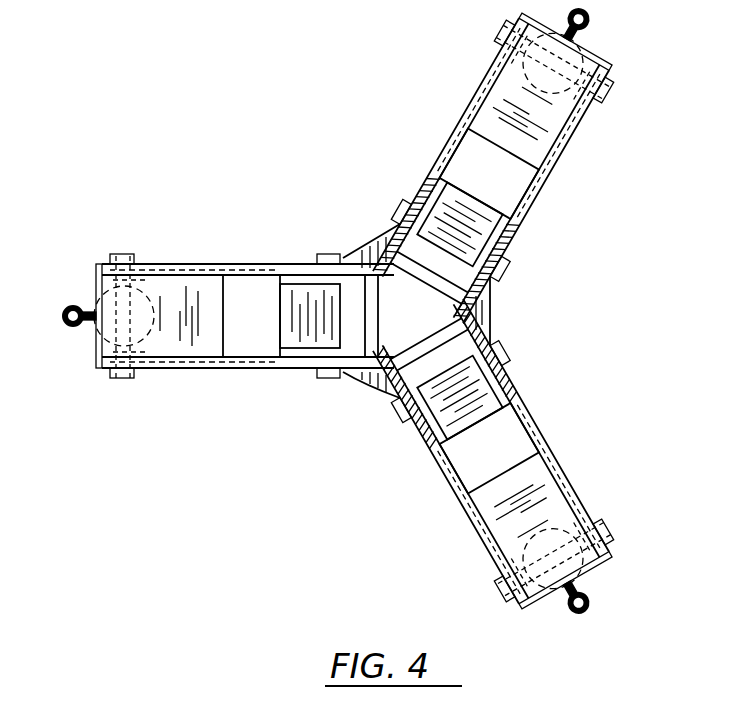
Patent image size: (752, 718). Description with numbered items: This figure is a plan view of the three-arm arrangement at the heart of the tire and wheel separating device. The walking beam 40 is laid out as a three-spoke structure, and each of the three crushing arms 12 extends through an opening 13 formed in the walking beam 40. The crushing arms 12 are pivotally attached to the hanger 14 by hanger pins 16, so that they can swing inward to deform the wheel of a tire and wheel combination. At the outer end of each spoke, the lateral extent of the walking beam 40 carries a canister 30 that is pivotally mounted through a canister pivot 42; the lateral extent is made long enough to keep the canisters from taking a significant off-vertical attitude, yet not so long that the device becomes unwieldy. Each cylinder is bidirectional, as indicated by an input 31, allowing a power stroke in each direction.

The crushing arm 12 is at (430, 205).
The opening 13 is at (496, 192).
The hanger 14 is at (362, 398).
The hanger pin 16 is at (348, 366).
The canister 30 is at (598, 52).
The input 31 is at (586, 22).
The walking beam 40 is at (542, 172).
The canister pivot 42 is at (500, 36).